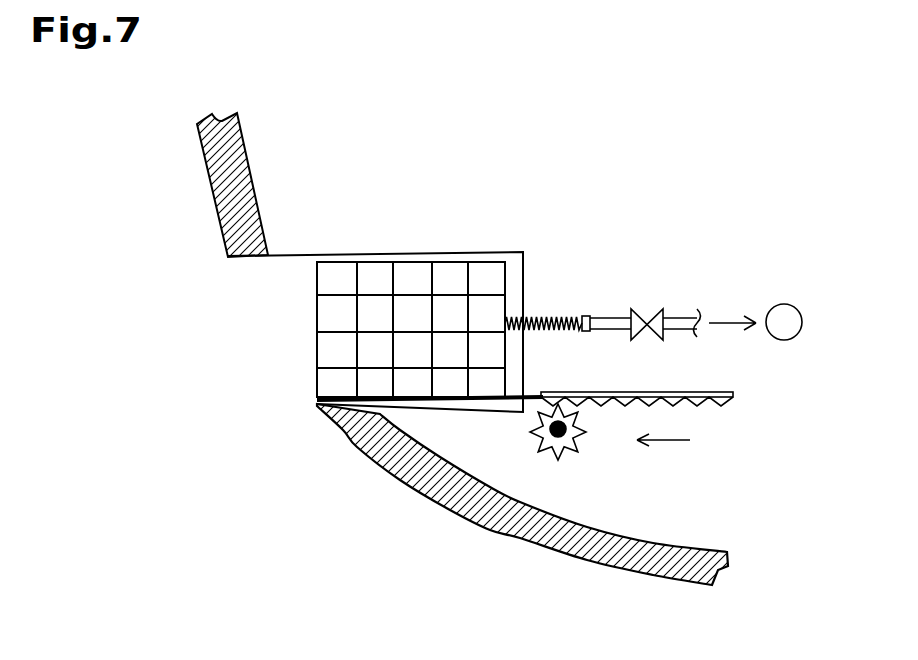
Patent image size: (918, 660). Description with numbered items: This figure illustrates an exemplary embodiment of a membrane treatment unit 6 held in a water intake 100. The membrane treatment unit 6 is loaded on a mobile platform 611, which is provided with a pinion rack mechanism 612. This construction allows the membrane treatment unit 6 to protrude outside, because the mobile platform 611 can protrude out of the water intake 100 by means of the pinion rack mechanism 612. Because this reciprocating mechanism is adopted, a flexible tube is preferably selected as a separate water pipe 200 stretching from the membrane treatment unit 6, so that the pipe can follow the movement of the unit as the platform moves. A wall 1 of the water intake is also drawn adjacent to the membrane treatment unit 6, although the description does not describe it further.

The wall 1 is at (208, 193).
The water intake 100 is at (290, 270).
The membrane treatment unit 6 is at (317, 343).
The mobile platform 611 is at (313, 403).
The pinion rack mechanism 612 is at (588, 463).
The separate water pipe 200 is at (555, 313).